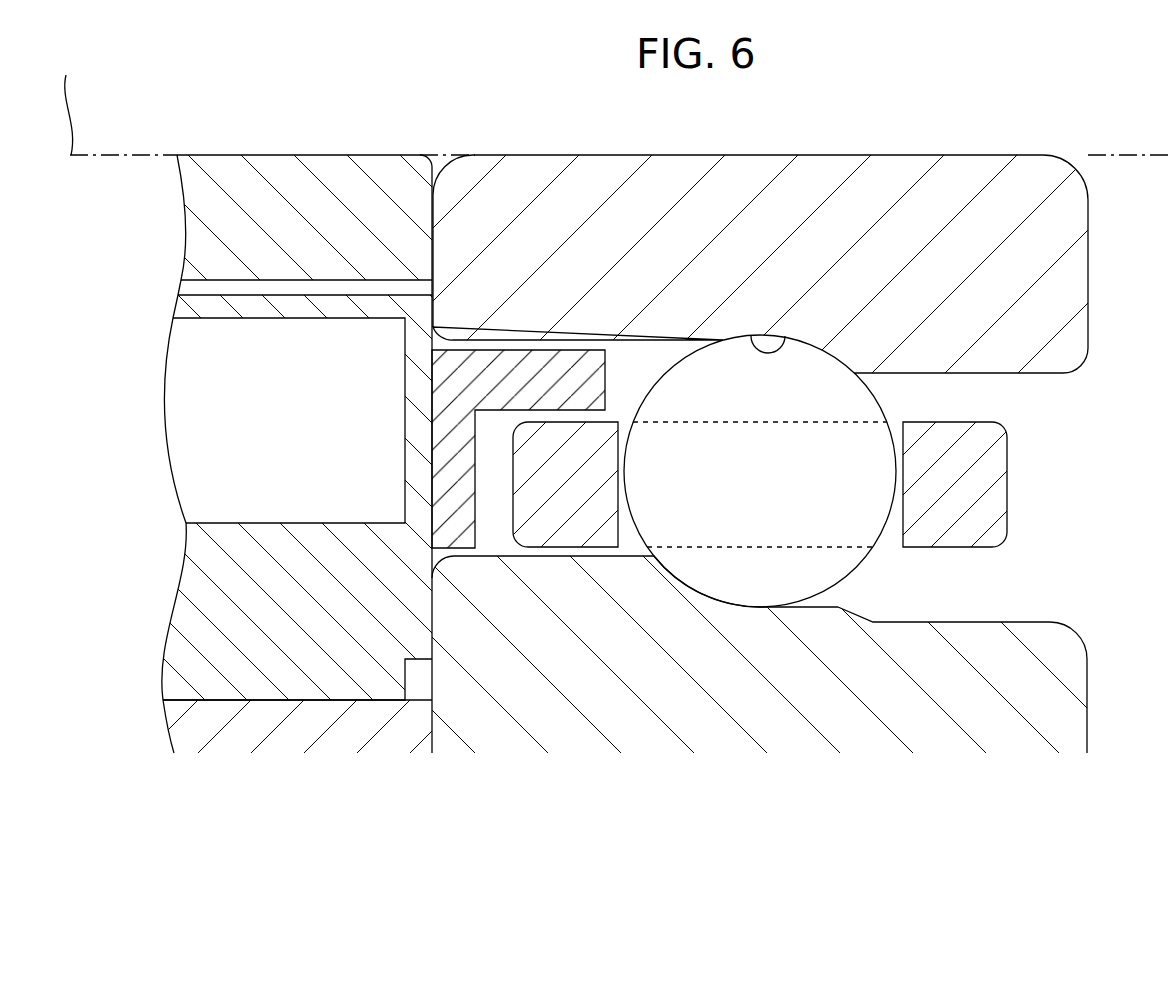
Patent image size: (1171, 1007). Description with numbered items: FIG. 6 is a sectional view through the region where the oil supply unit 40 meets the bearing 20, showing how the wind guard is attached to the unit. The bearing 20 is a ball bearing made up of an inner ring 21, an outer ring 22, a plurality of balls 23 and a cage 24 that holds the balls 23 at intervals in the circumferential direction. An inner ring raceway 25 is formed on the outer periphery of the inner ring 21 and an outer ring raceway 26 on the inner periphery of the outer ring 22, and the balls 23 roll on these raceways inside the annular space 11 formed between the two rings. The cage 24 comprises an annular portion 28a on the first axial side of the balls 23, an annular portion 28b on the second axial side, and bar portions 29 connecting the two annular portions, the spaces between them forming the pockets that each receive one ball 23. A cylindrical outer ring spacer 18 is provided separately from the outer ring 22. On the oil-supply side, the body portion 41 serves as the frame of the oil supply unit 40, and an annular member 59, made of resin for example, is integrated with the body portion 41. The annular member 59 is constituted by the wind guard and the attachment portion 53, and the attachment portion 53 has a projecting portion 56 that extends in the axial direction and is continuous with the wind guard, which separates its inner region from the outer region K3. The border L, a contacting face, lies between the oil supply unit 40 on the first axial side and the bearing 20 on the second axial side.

The annular space 11 is at (492, 520).
The outer ring spacer 18 is at (375, 717).
The bearing 20 is at (802, 218).
The inner ring 21 is at (1063, 271).
The outer ring 22 is at (1040, 676).
The balls 23 is at (735, 577).
The cage 24 is at (829, 629).
The inner ring raceway 25 is at (768, 337).
The outer ring raceway 26 is at (695, 598).
The annular portion 28a is at (583, 520).
The annular portion 28b is at (1010, 457).
The bar portions 29 is at (763, 547).
The oil supply unit 40 is at (297, 486).
The body portion 41 is at (345, 636).
The attachment portion 53 is at (418, 406).
The projecting portion 56 is at (545, 381).
The annular member 59 is at (524, 338).
The outer region K3 is at (468, 331).
The border L is at (433, 693).